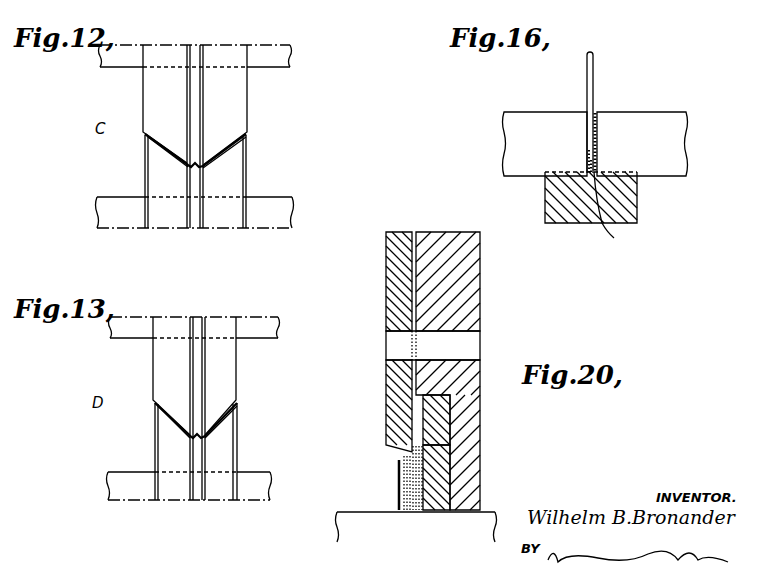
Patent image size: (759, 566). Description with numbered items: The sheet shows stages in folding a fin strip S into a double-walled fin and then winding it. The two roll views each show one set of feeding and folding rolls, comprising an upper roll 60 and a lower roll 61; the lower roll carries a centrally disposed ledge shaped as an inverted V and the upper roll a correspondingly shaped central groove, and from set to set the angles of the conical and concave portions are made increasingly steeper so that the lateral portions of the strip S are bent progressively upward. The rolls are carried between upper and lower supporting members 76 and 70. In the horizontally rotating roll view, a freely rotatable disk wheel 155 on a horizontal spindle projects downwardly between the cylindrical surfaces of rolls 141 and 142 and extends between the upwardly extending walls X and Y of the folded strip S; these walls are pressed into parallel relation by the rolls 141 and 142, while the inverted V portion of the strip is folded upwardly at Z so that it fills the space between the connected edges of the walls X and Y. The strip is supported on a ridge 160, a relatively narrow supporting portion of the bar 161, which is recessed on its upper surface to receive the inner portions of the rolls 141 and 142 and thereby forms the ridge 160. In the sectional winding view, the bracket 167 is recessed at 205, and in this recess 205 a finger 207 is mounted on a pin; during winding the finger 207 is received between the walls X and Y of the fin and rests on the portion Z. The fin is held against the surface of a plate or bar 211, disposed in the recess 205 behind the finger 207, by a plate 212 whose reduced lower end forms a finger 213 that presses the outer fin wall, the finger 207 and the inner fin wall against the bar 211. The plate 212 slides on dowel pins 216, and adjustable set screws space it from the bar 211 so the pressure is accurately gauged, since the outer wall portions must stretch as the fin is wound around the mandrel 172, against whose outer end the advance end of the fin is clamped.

In FIG. 12, the upper plate / punch holder 76 is at (272, 60).
In FIG. 13, the upper plate / punch holder 76 is at (261, 330).
In FIG. 12, the lower plate / die holder 70 is at (267, 222).
In FIG. 13, the lower plate / die holder 70 is at (252, 492).
In FIG. 12, the upper roll 60 is at (240, 100).
In FIG. 13, the upper roll 60 is at (226, 378).
In FIG. 12, the lower roll 61 is at (232, 182).
In FIG. 13, the lower roll 61 is at (222, 455).
In FIG. 12, the strip S is at (167, 152).
In FIG. 13, the strip S is at (173, 430).
In FIG. 16, the roll 141 is at (531, 118).
In FIG. 16, the roll 142 is at (648, 118).
In FIG. 16, the disk wheel 155 is at (594, 80).
In FIG. 16, the bar 161 is at (628, 202).
In FIG. 16, the ridge 160 is at (619, 213).
In FIG. 16, the wall of the folded strip X is at (585, 130).
In FIG. 20, the wall of the folded strip X is at (403, 473).
In FIG. 16, the wall of the folded strip Y is at (597, 142).
In FIG. 20, the wall of the folded strip Y is at (420, 488).
In FIG. 16, the inverted V portion of the strip Z is at (600, 152).
In FIG. 20, the inverted V portion of the strip Z is at (425, 512).
In FIG. 20, the plate 212 is at (388, 292).
In FIG. 20, the bracket 167 is at (467, 300).
In FIG. 20, the dowel pins 216 is at (397, 347).
In FIG. 20, the recess 205 is at (450, 468).
In FIG. 20, the plate or bar 211 is at (435, 422).
In FIG. 20, the finger 207 is at (423, 448).
In FIG. 20, the finger 213 is at (408, 512).
In FIG. 20, the mandrel 172 is at (352, 515).